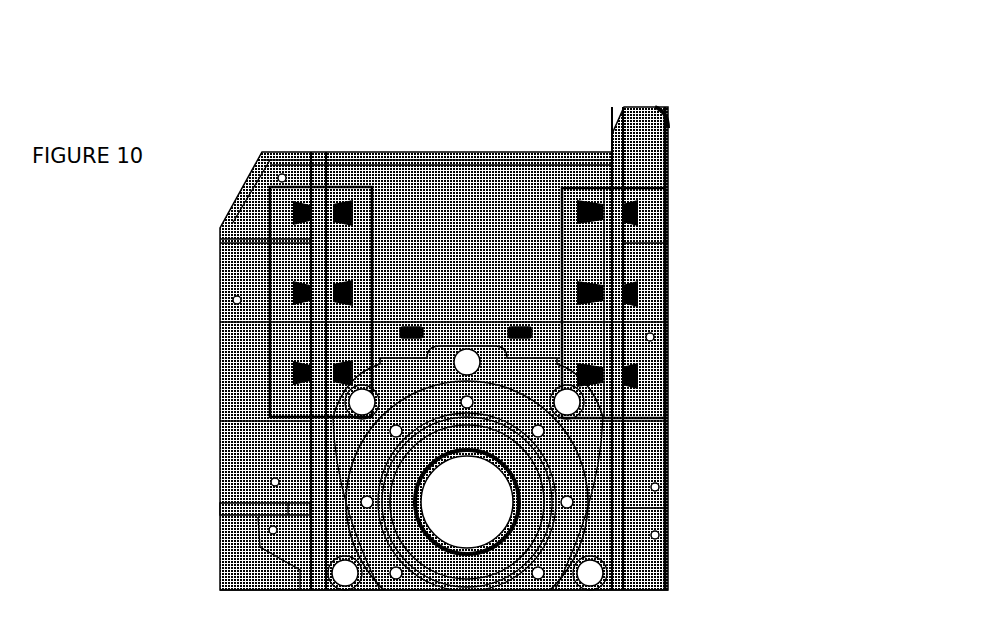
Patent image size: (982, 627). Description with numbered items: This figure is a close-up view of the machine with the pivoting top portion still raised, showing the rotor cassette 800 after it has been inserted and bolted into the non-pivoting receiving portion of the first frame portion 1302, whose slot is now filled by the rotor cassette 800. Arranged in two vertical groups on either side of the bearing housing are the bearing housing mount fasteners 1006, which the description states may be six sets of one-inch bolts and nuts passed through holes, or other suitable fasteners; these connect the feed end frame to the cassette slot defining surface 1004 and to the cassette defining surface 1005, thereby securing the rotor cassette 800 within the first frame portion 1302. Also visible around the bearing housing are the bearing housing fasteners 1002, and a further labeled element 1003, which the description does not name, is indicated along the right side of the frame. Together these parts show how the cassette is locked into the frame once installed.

The rotor cassette 800 is at (572, 82).
The bearing housing fasteners 1002 is at (467, 348).
The right vertical rail 1003 is at (612, 533).
The cassette slot defining surface 1004 is at (315, 571).
The cassette defining surface 1005 is at (325, 400).
The bearing housing mount fasteners 1006 is at (283, 373).
The first frame portion 1302 is at (718, 590).